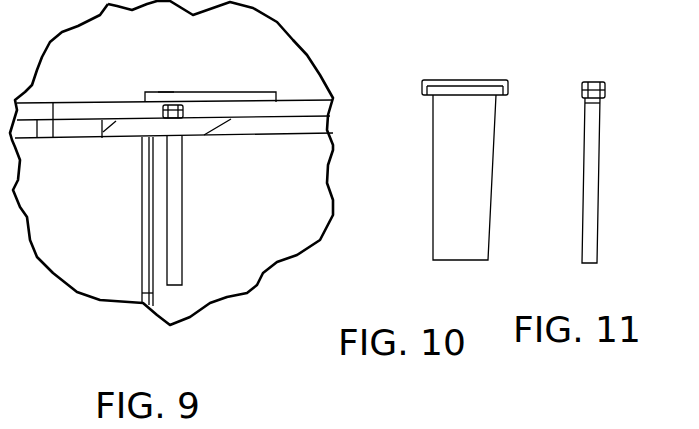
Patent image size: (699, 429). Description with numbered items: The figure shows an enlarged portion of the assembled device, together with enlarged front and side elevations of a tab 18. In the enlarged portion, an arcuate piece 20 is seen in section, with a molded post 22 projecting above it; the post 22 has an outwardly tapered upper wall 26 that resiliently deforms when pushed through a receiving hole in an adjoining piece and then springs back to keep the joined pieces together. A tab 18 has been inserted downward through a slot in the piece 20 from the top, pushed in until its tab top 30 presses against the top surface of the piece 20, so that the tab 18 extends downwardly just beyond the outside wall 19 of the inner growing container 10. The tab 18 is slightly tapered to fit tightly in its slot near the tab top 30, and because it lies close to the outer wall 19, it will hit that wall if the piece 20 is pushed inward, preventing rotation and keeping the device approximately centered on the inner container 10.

In FIG. 9, the inner growing container 10 is at (142, 222).
In FIG. 9, the tab 18 is at (173, 232).
In FIG. 10, the tab 18 is at (487, 180).
In FIG. 11, the tab 18 is at (590, 153).
In FIG. 9, the outside wall of inner growing container 19 is at (153, 293).
In FIG. 9, the arcuate piece 20 is at (107, 107).
In FIG. 9, the post 22 is at (230, 92).
In FIG. 9, the tapered upper wall 26 is at (165, 92).
In FIG. 9, the tab top 30 is at (185, 109).
In FIG. 10, the tab top 30 is at (458, 87).
In FIG. 11, the tab top 30 is at (593, 80).